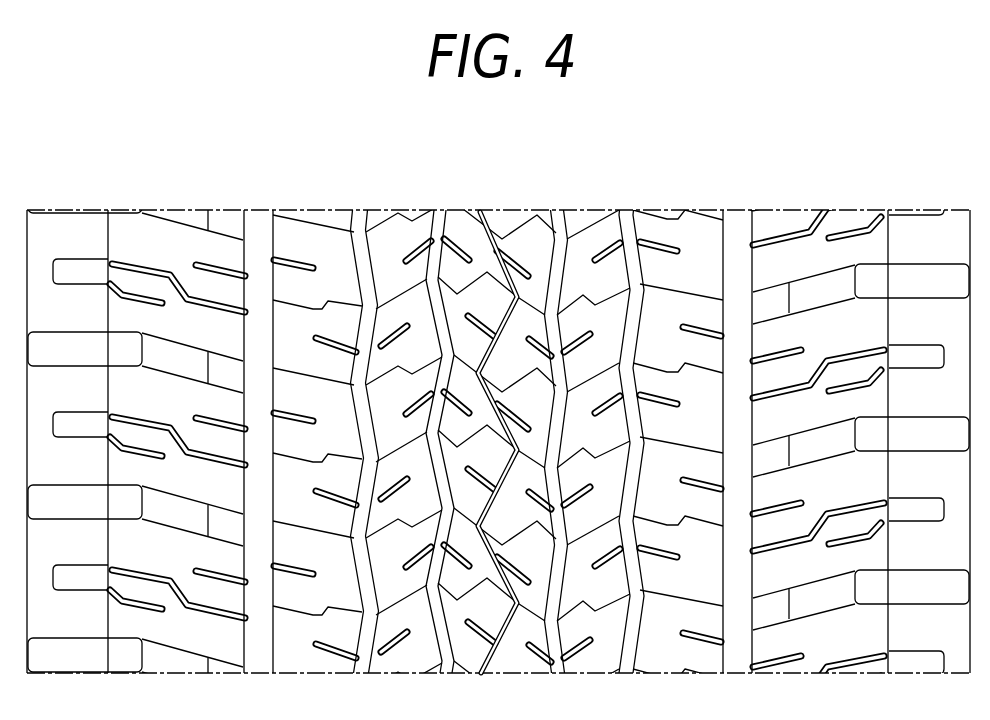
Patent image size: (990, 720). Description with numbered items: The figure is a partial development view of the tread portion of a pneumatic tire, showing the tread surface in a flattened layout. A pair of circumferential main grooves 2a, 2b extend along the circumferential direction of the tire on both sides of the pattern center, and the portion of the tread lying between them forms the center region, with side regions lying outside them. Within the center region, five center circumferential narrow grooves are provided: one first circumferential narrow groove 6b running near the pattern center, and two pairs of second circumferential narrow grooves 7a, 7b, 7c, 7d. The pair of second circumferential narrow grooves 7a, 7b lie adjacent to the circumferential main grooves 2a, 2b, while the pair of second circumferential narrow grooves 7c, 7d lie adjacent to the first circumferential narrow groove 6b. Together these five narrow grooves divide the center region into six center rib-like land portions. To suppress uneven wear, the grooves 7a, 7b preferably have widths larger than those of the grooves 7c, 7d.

The circumferential main groove 2a is at (262, 227).
The circumferential main groove 2b is at (737, 232).
The second circumferential narrow groove 7a is at (365, 227).
The second circumferential narrow groove 7b is at (625, 228).
The second circumferential narrow groove 7c is at (448, 227).
The second circumferential narrow groove 7d is at (562, 230).
The first circumferential narrow groove 6b is at (489, 218).